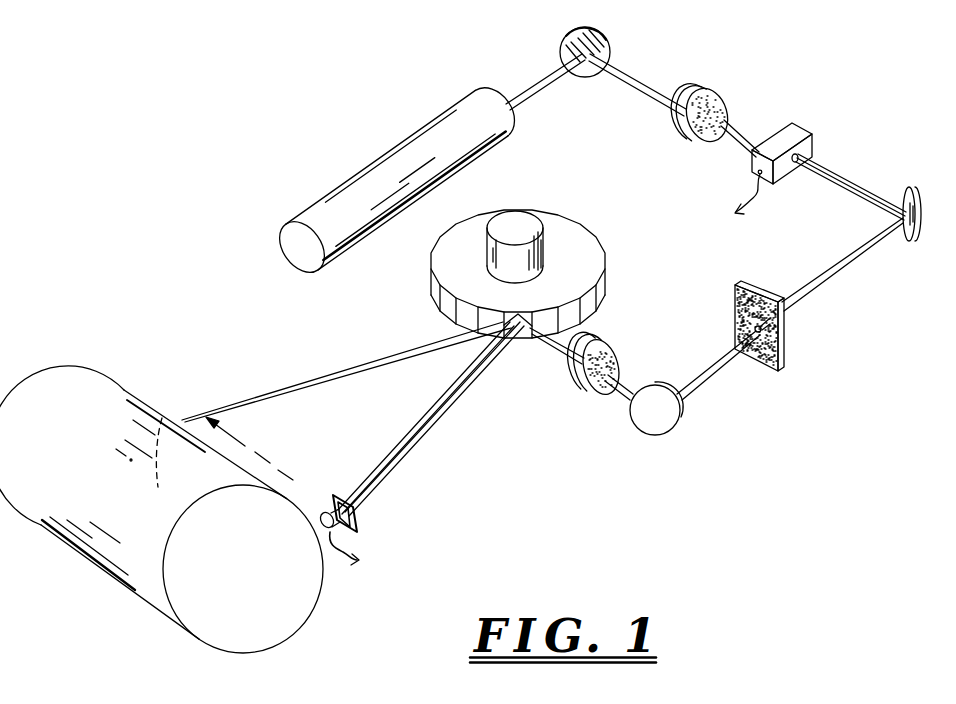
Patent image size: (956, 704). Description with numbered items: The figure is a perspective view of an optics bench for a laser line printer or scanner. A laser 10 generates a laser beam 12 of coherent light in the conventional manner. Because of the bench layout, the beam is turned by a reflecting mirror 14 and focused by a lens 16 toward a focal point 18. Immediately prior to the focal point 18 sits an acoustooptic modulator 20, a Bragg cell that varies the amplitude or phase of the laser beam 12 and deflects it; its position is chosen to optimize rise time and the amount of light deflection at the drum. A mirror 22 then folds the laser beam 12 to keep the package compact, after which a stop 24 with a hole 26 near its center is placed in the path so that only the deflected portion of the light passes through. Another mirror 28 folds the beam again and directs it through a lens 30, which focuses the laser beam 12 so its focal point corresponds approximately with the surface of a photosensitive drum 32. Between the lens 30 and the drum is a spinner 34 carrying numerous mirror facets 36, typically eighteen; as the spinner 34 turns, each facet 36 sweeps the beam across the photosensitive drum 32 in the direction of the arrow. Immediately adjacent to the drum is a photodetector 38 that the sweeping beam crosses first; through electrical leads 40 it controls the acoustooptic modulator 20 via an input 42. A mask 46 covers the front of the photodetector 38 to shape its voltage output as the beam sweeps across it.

The laser 10 is at (367, 167).
The laser beam 12 is at (533, 75).
The reflecting mirror 14 is at (610, 42).
The lens 16 is at (718, 96).
The focal point 18 is at (830, 171).
The acoustooptic modulator 20 is at (797, 132).
The mirror 22 is at (906, 236).
The stop 24 is at (785, 354).
The hole 26 is at (762, 330).
The mirror 28 is at (654, 385).
The lens 30 is at (583, 391).
The photosensitive drum 32 is at (310, 600).
The spinner 34 is at (429, 290).
The mirror facets 36 is at (566, 310).
The photodetector 38 is at (353, 537).
The electrical leads 40 is at (343, 563).
The input 42 is at (750, 199).
The mask 46 is at (356, 510).